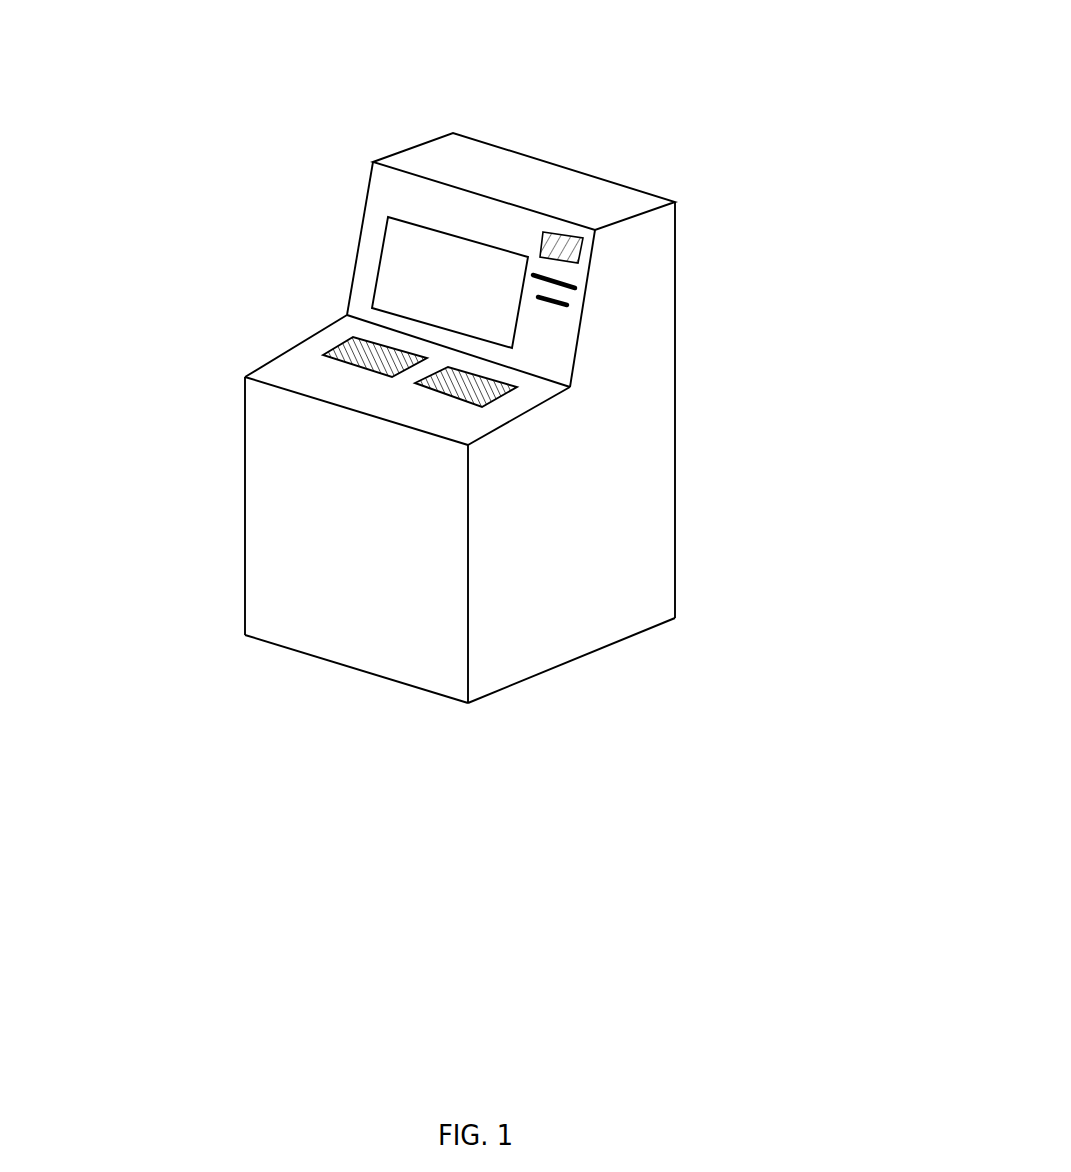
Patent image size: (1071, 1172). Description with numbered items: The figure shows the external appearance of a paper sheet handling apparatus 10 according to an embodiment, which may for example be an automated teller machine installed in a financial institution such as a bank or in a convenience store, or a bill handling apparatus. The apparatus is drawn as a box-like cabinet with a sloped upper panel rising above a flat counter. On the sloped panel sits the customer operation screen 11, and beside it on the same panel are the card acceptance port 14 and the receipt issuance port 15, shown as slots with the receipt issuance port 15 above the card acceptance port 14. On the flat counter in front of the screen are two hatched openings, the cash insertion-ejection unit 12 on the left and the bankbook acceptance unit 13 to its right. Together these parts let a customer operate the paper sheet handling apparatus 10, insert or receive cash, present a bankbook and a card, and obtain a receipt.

The paper sheet handling apparatus 10 is at (408, 118).
The customer operation screen 11 is at (364, 285).
The cash insertion-ejection unit 12 is at (347, 342).
The bankbook acceptance unit 13 is at (503, 403).
The card acceptance port 14 is at (569, 307).
The receipt issuance port 15 is at (570, 285).